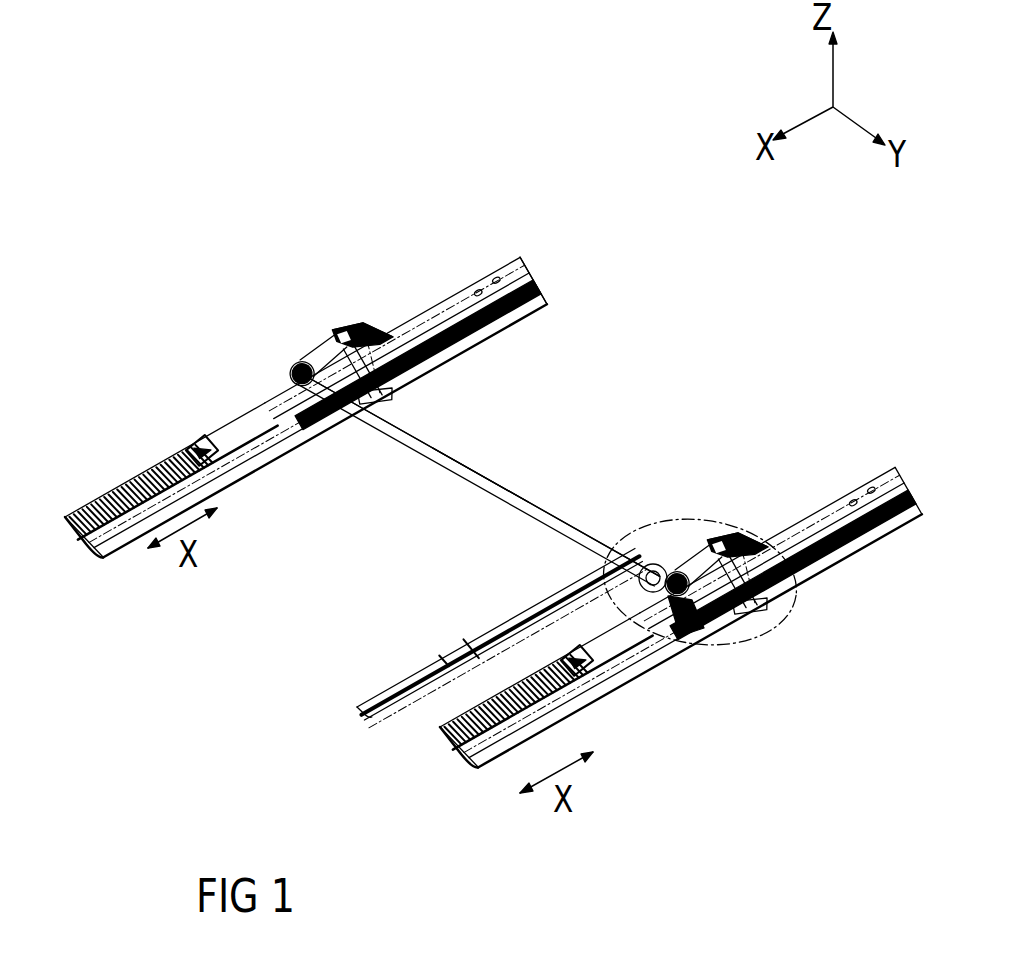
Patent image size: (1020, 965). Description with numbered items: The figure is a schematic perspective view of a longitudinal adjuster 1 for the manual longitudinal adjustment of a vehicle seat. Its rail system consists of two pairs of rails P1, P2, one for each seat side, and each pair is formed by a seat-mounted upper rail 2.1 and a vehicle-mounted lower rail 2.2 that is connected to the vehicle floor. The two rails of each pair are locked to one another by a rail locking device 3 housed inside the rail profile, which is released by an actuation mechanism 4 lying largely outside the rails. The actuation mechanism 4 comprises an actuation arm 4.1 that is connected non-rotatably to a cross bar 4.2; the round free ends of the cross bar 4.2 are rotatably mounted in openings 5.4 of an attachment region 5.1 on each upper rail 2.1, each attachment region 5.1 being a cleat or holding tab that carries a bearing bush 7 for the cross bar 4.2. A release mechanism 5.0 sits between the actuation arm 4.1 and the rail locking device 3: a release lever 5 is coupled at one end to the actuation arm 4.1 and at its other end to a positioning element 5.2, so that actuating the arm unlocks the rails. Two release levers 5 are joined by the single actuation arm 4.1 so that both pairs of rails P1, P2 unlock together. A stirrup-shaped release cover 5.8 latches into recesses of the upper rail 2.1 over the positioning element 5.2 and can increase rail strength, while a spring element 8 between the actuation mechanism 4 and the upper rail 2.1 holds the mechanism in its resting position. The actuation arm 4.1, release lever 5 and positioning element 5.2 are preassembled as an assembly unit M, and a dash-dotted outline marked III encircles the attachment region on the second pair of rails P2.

The longitudinal adjuster 1 is at (733, 330).
The upper rail 2.1 is at (487, 283).
The lower rail 2.2 is at (118, 480).
The rail locking device 3 is at (307, 302).
The actuation mechanism 4 is at (498, 470).
The actuation arm 4.1 is at (418, 673).
The cross bar 4.2 is at (442, 463).
The release lever 5 is at (378, 393).
The release mechanism 5.0 is at (365, 305).
The attachment region 5.1 is at (295, 372).
The positioning element 5.2 is at (400, 352).
The openings 5.4 is at (300, 365).
The release cover 5.8 is at (350, 328).
The bearing bush 7 is at (675, 605).
The spring element 8 is at (655, 562).
The pair of rails P1 is at (207, 220).
The pair of rails P2 is at (780, 722).
The assembly unit M is at (597, 412).
The detail III is at (790, 605).